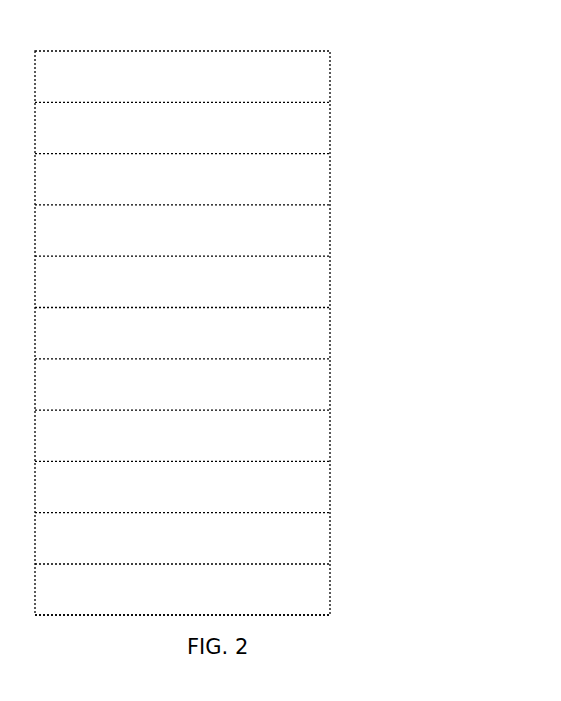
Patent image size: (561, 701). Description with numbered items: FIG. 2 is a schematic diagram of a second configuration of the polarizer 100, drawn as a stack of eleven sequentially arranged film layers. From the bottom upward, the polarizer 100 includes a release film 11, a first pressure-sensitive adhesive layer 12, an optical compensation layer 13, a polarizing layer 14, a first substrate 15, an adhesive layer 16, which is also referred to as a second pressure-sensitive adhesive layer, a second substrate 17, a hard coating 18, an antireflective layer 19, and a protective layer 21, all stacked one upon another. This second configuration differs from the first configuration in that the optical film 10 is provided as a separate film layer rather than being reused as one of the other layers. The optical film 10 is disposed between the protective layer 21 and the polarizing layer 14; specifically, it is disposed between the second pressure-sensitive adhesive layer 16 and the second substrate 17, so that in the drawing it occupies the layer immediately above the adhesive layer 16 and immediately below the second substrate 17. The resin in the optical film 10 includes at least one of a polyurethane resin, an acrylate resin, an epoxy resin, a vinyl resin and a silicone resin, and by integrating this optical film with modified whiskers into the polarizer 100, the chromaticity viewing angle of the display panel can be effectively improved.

The polarizer 100 is at (82, 33).
The protective layer 21 is at (330, 76).
The antireflective layer 19 is at (330, 127).
The hard coating 18 is at (330, 178).
The second substrate 17 is at (330, 230).
The optical film 10 is at (330, 281).
The adhesive layer 16 is at (330, 332).
The first substrate 15 is at (330, 384).
The polarizing layer 14 is at (330, 435).
The optical compensation layer 13 is at (330, 486).
The first pressure-sensitive adhesive layer 12 is at (330, 537).
The release film 11 is at (330, 589).